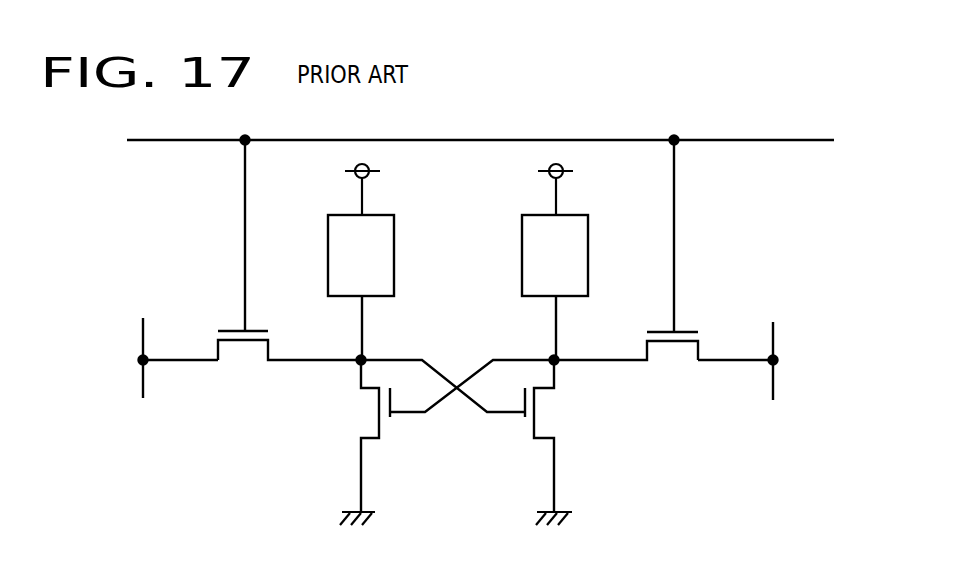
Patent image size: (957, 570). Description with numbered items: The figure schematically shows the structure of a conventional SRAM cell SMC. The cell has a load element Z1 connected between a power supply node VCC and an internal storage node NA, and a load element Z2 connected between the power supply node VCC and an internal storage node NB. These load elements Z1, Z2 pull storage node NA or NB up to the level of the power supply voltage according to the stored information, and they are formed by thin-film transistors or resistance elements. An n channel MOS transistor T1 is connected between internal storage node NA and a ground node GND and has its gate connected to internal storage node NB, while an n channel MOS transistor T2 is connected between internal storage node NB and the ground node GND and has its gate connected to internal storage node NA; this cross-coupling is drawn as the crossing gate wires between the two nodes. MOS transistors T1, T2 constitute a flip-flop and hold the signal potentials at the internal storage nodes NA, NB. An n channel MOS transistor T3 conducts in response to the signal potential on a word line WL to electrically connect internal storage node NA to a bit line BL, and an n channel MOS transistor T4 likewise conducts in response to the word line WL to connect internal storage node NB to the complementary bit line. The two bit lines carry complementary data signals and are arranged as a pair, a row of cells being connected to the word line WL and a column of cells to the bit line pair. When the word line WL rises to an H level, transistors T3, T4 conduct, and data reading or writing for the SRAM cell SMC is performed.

The word line WL is at (757, 141).
The bit line BL is at (142, 332).
The n channel MOS transistor T1 is at (383, 440).
The n channel MOS transistor T2 is at (530, 440).
The n channel MOS transistor T3 is at (245, 352).
The n channel MOS transistor T4 is at (672, 353).
The load element Z1 is at (361, 287).
The load element Z2 is at (555, 287).
The internal storage node NA is at (364, 358).
The internal storage node NB is at (551, 358).
The power supply node VCC is at (480, 185).
The ground node GND is at (457, 536).
The SRAM cell SMC is at (731, 552).